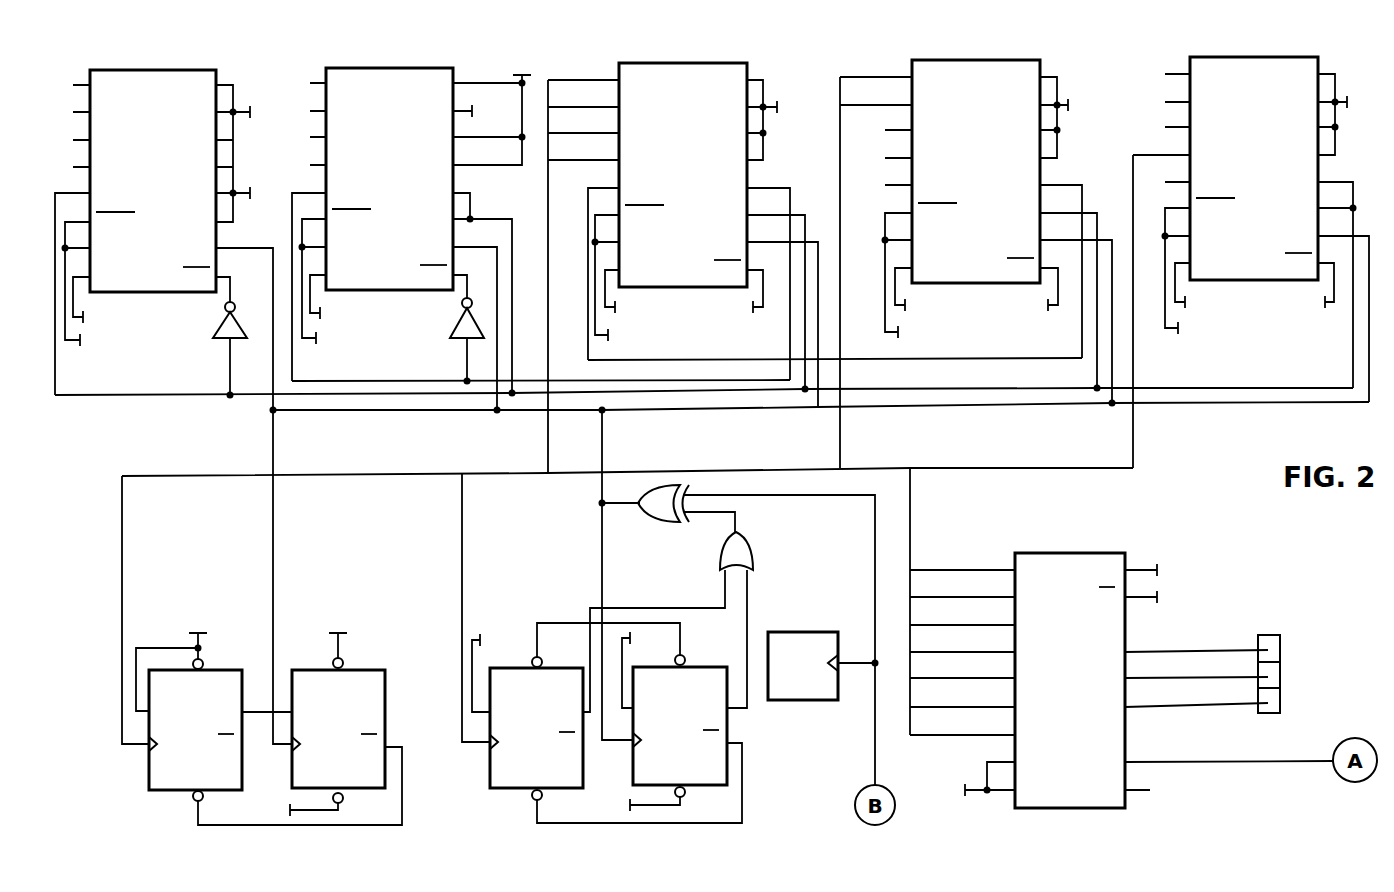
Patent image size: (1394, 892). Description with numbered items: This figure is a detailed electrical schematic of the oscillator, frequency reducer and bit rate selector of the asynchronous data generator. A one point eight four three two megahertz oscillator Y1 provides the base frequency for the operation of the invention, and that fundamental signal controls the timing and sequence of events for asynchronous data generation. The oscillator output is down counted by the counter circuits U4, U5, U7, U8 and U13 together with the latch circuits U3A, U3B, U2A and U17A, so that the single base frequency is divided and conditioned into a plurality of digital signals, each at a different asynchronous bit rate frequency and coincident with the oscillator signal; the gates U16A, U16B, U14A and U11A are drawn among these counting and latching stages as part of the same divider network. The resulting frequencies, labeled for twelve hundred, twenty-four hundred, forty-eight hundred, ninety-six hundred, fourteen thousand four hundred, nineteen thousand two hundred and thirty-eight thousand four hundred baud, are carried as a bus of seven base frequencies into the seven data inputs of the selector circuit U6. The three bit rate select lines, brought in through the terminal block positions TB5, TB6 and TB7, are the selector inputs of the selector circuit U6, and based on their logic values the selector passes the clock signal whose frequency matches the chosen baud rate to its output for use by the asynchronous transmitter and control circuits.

The counter circuit U13 is at (173, 390).
The counter circuit U8 is at (414, 223).
The counter circuit U7 is at (683, 252).
The counter circuit U5 is at (976, 247).
The counter circuit U4 is at (1258, 246).
The 74LS04 inverter U16A is at (191, 336).
The 74LS04 inverter U16B is at (426, 328).
The latch circuit U3A is at (237, 698).
The latch circuit U3B is at (330, 711).
The latch circuit U2A is at (586, 696).
The latch circuit U17A is at (700, 693).
The 74HCT86 exclusive-OR gate U14A is at (738, 635).
The 74HCT32 OR gate U11A is at (788, 553).
The oscillator Y1 is at (820, 679).
The selector circuit U6 is at (1121, 662).
The terminal block baud rate select 0 TB5 is at (1291, 649).
The terminal block baud rate select 1 TB6 is at (1291, 676).
The terminal block baud rate select 2 TB7 is at (1291, 702).